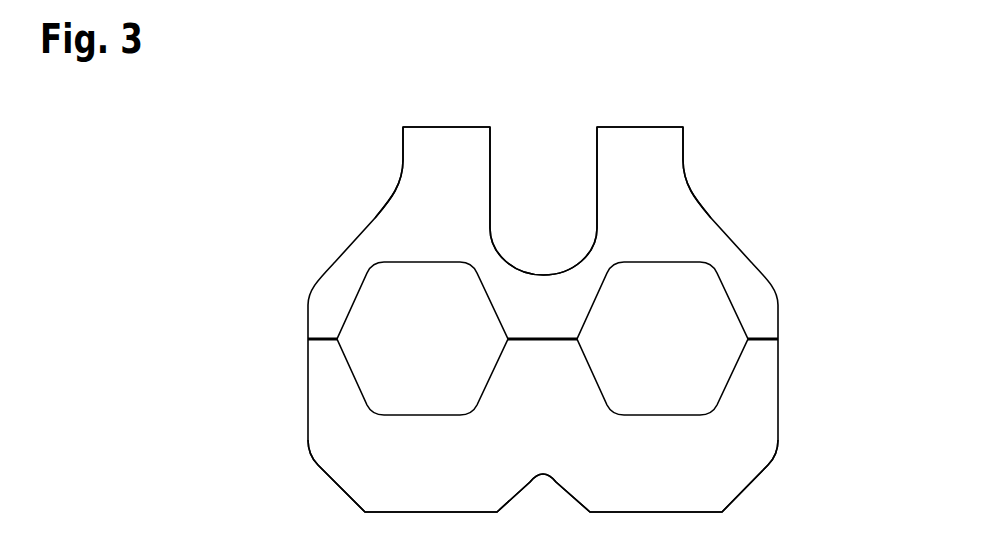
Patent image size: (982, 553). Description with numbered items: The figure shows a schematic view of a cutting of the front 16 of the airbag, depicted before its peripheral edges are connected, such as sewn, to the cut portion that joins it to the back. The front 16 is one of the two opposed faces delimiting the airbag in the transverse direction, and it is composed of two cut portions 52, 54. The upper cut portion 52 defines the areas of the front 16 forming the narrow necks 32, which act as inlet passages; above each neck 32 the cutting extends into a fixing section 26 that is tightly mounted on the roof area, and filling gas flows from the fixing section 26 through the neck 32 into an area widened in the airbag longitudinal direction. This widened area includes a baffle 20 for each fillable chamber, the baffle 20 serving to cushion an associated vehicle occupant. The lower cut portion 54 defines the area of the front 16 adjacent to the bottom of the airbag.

The front 16 is at (226, 186).
The baffle 20 is at (403, 305).
The fixing section 26 is at (463, 127).
The narrow neck 32 is at (418, 148).
The cut portion 52 is at (680, 226).
The cut portion 54 is at (338, 450).